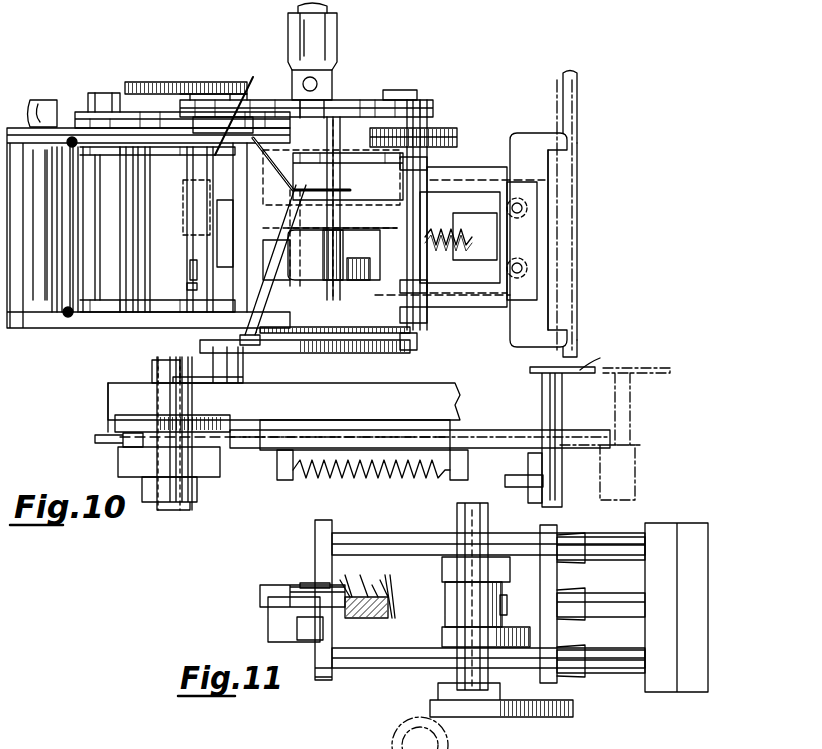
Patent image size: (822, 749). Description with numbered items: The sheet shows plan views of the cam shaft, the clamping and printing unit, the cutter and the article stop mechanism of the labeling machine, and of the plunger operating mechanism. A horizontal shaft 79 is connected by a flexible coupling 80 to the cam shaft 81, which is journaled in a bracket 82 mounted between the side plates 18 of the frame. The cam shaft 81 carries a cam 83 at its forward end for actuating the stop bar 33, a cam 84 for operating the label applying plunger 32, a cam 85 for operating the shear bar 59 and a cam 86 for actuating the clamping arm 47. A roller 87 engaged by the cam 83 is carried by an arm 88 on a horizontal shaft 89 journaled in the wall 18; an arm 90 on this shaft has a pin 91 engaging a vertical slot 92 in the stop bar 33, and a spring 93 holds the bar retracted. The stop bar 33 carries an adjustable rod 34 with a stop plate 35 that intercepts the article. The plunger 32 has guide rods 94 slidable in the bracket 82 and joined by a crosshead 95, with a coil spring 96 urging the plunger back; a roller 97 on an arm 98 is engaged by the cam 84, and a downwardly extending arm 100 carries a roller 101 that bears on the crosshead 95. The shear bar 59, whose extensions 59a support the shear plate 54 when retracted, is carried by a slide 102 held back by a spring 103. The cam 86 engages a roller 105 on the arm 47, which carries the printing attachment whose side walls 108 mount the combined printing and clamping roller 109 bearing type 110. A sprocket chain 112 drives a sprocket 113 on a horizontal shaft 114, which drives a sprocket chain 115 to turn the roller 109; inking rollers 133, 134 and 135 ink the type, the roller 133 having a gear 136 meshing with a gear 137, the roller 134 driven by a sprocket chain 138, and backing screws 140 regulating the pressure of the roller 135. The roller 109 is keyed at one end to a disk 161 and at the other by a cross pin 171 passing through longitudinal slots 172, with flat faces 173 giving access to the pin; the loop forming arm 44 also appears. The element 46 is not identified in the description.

In FIG. 10, the side plate 18 is at (333, 395).
In FIG. 11, the label applying plunger 32 is at (700, 586).
In FIG. 10, the stop bar 33 is at (478, 442).
In FIG. 10, the rod 34 is at (555, 432).
In FIG. 10, the stop plate 35 is at (585, 365).
In FIG. 10, the vertically movable arm 44 is at (32, 115).
In FIG. 10, the tape 46 is at (55, 243).
In FIG. 10, the clamping arm 47 is at (290, 165).
In FIG. 10, the shear plate 54 is at (575, 300).
In FIG. 10, the shear bar 59 is at (545, 222).
In FIG. 10, the extensions 59a is at (575, 147).
In FIG. 10, the horizontal shaft 79 is at (322, 12).
In FIG. 10, the flexible coupling 80 is at (318, 40).
In FIG. 10, the cam shaft 81 is at (335, 165).
In FIG. 11, the cam shaft 81 is at (458, 515).
In FIG. 10, the bracket 82 is at (482, 177).
In FIG. 10, the cam 83 is at (375, 348).
In FIG. 11, the cam 83 is at (560, 717).
In FIG. 10, the cam 84 is at (428, 284).
In FIG. 11, the cam 84 is at (530, 650).
In FIG. 10, the cam 85 is at (337, 240).
In FIG. 11, the cam 85 is at (505, 608).
In FIG. 10, the cam 86 is at (340, 200).
In FIG. 11, the cam 86 is at (505, 570).
In FIG. 10, the roller 87 is at (250, 345).
In FIG. 11, the roller 87 is at (447, 733).
In FIG. 10, the arm 88 is at (205, 370).
In FIG. 10, the horizontal shaft 89 is at (173, 512).
In FIG. 10, the arm 90 is at (125, 467).
In FIG. 10, the pin 91 is at (127, 410).
In FIG. 10, the vertical slot 92 is at (118, 436).
In FIG. 10, the spring 93 is at (340, 480).
In FIG. 11, the guide rods 94 is at (378, 535).
In FIG. 11, the crosshead 95 is at (315, 561).
In FIG. 11, the coil spring 96 is at (395, 620).
In FIG. 10, the roller 97 is at (310, 282).
In FIG. 10, the arm 98 is at (327, 220).
In FIG. 11, the downwardly extending arm 100 is at (280, 642).
In FIG. 11, the roller 101 is at (260, 600).
In FIG. 10, the slide 102 is at (440, 277).
In FIG. 10, the spring 103 is at (452, 228).
In FIG. 10, the roller 105 is at (335, 222).
In FIG. 10, the side walls 108 is at (60, 140).
In FIG. 10, the combined printing and clamping roller 109 is at (185, 225).
In FIG. 10, the type 110 is at (218, 245).
In FIG. 10, the sprocket chain 112 is at (455, 135).
In FIG. 10, the sprocket 113 is at (420, 128).
In FIG. 10, the horizontal shaft 114 is at (410, 320).
In FIG. 10, the sprocket chain 115 is at (355, 100).
In FIG. 10, the inking roller 133 is at (155, 185).
In FIG. 10, the inking roller 134 is at (70, 215).
In FIG. 10, the inking roller 135 is at (97, 275).
In FIG. 10, the gear 136 is at (135, 82).
In FIG. 10, the gear 137 is at (210, 94).
In FIG. 10, the sprocket chain 138 is at (78, 112).
In FIG. 10, the backing screws 140 is at (74, 138).
In FIG. 10, the disk 161 is at (231, 102).
In FIG. 10, the cross pin 171 is at (187, 286).
In FIG. 10, the longitudinal slots 172 is at (190, 268).
In FIG. 10, the flat faces 173 is at (200, 300).